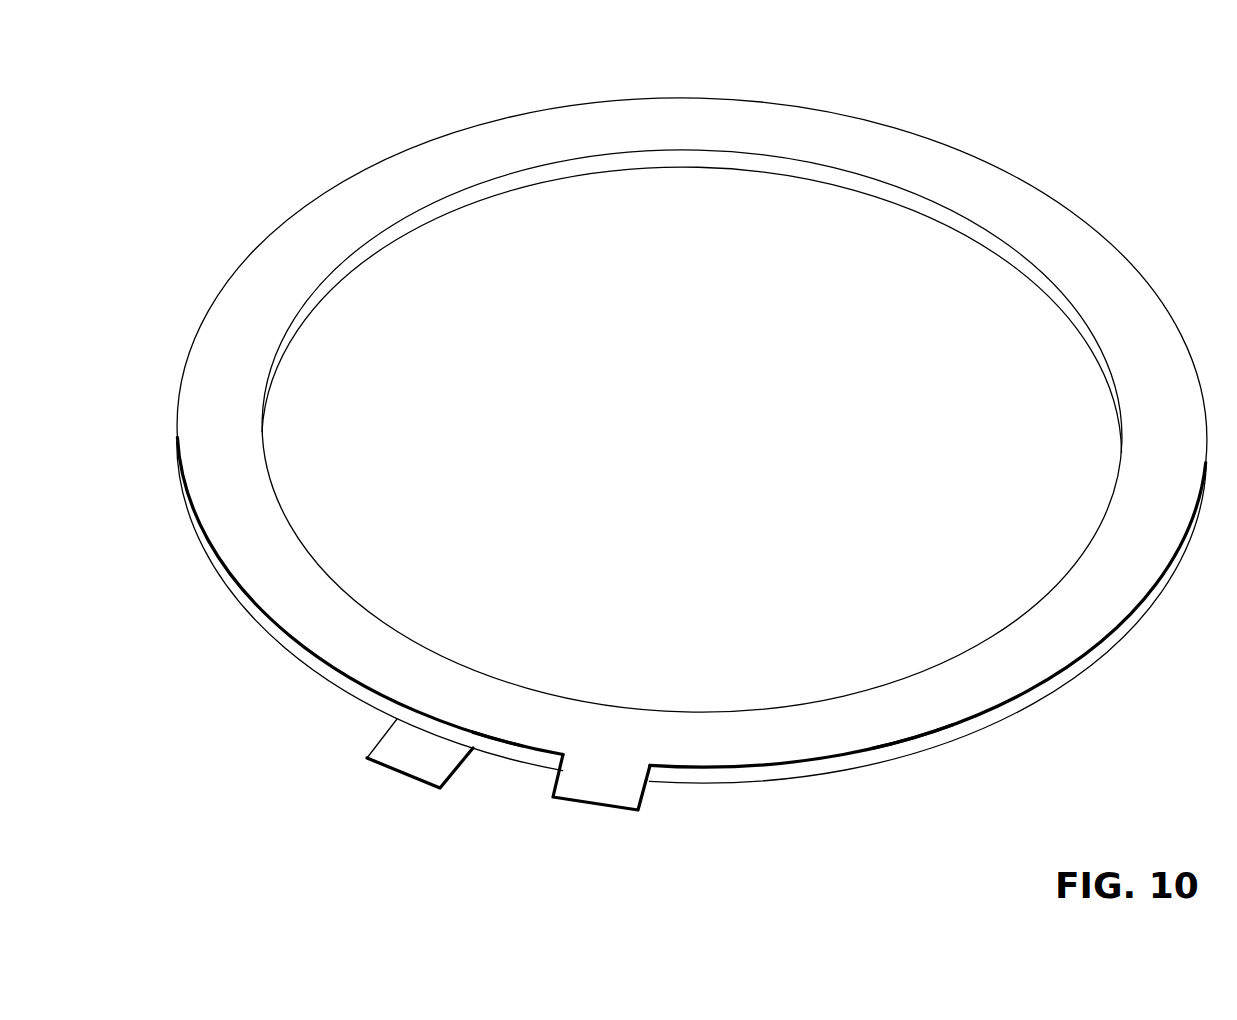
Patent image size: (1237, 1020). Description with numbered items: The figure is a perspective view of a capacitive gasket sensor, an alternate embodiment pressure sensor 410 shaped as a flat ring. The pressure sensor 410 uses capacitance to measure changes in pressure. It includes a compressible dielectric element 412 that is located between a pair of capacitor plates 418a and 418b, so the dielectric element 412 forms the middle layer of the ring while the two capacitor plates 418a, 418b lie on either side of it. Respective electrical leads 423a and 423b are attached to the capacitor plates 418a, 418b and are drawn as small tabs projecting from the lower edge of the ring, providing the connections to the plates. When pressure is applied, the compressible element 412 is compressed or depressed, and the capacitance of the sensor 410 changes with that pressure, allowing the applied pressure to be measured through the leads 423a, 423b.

The pressure sensor 410 is at (1060, 157).
The compressible dielectric element 412 is at (798, 772).
The capacitor plate 418a is at (912, 728).
The capacitor plate 418b is at (488, 748).
The electrical lead 423a is at (618, 790).
The electrical lead 423b is at (408, 758).